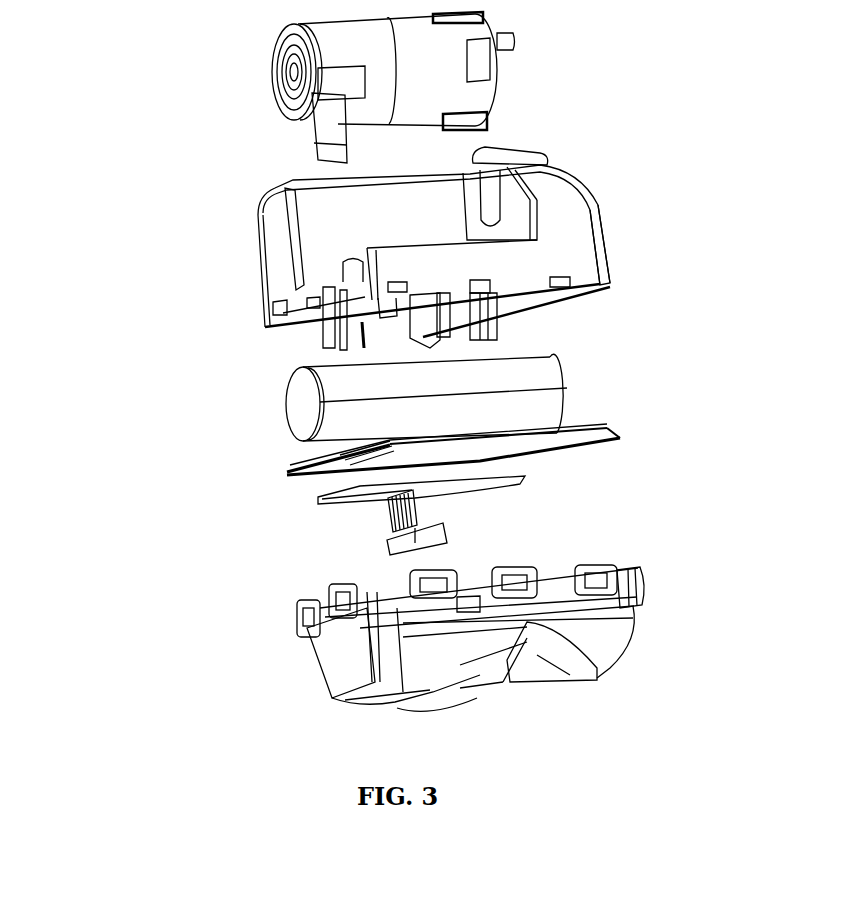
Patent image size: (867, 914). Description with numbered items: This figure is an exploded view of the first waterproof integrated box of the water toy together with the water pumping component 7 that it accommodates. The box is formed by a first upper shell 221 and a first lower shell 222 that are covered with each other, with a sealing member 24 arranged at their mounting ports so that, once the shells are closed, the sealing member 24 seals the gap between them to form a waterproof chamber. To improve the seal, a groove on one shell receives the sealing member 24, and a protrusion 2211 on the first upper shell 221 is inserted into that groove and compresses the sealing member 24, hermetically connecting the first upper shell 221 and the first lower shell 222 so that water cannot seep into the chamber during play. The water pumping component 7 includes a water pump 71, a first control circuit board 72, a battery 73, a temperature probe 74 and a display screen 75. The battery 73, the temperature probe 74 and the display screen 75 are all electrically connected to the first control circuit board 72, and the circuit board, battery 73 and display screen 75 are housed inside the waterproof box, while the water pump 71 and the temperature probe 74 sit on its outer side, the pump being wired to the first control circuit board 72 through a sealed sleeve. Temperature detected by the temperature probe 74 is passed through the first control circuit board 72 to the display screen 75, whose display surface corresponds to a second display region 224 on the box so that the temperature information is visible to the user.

The water pumping component 7 is at (163, 537).
The water pump 71 is at (270, 102).
The first control circuit board 72 is at (322, 498).
The battery 73 is at (297, 410).
The temperature probe 74 is at (306, 281).
The display screen 75 is at (393, 540).
The sealing member 24 is at (619, 433).
The first upper shell 221 is at (602, 190).
The protrusion 2211 is at (612, 285).
The first lower shell 222 is at (649, 606).
The second display region 224 is at (330, 698).